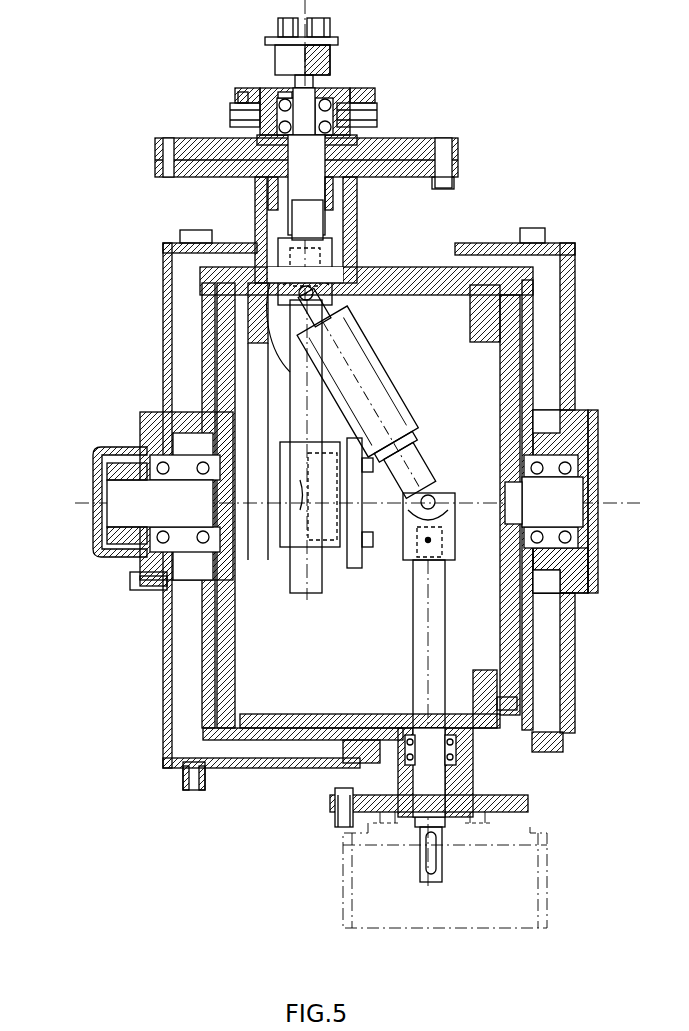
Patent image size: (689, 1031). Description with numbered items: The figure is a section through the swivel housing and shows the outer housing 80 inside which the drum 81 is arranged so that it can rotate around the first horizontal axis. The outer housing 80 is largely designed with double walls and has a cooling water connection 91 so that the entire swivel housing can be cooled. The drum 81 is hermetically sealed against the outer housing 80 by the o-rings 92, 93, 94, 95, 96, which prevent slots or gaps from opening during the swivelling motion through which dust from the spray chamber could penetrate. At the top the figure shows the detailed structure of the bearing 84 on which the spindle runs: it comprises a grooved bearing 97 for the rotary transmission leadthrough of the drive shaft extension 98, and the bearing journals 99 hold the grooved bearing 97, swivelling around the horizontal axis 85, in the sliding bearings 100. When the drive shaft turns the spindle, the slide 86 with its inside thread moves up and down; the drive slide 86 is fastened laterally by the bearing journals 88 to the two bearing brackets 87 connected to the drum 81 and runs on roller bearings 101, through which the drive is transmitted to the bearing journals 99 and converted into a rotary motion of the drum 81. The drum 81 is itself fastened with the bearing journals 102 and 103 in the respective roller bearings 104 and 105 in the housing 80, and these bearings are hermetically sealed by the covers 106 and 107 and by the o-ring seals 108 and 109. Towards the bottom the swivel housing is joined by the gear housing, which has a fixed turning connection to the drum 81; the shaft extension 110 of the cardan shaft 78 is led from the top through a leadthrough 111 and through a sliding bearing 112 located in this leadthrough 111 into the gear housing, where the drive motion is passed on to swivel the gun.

The cardan shaft 78 is at (392, 364).
The outer housing 80 is at (158, 660).
The drum 81 is at (205, 650).
The bearing 84 is at (368, 112).
The horizontal axis 85 is at (240, 118).
The slide 86 is at (350, 487).
The bearing brackets 87 is at (205, 620).
The bearing journals 88 is at (260, 490).
The cooling water connection 91 is at (182, 780).
The o-ring 92 is at (247, 740).
The o-ring 93 is at (340, 745).
The o-ring 94 is at (535, 685).
The o-ring 95 is at (493, 327).
The o-ring 96 is at (395, 265).
The grooved bearing 97 is at (282, 95).
The drive shaft extension 98 is at (320, 85).
The bearing journals 99 is at (345, 110).
The sliding bearings 100 is at (245, 102).
The roller bearings 101 is at (213, 420).
The bearing journal 102 is at (165, 493).
The bearing journal 103 is at (560, 513).
The roller bearing 104 is at (125, 558).
The roller bearing 105 is at (597, 588).
The cover 106 is at (95, 505).
The cover 107 is at (598, 467).
The o-ring seal 108 is at (142, 445).
The o-ring seal 109 is at (598, 433).
The shaft extension 110 is at (283, 722).
The leadthrough 111 is at (420, 594).
The sliding bearing 112 is at (530, 823).